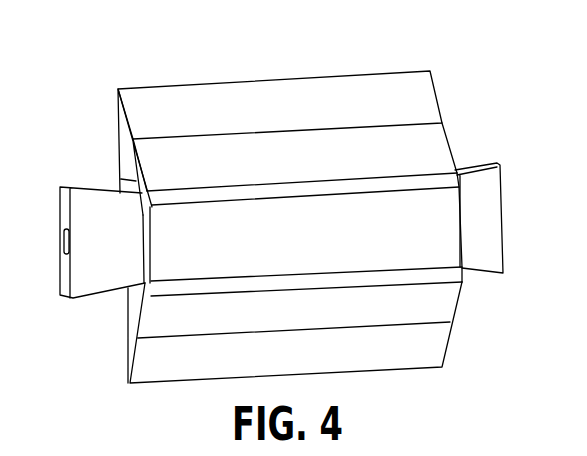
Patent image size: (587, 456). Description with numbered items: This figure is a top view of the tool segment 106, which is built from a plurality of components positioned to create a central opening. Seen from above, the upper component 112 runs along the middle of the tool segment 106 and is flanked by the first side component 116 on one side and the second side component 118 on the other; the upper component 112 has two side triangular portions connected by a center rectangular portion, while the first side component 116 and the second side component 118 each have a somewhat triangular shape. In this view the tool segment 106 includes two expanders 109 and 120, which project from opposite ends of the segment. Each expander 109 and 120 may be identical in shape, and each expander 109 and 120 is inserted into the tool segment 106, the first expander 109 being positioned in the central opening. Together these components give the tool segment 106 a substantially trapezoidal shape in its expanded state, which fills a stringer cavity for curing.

The tool segment 106 is at (282, 191).
The expander 109 is at (83, 188).
The upper component 112 is at (148, 162).
The first side component 116 is at (172, 97).
The second side component 118 is at (143, 365).
The expander 120 is at (476, 166).